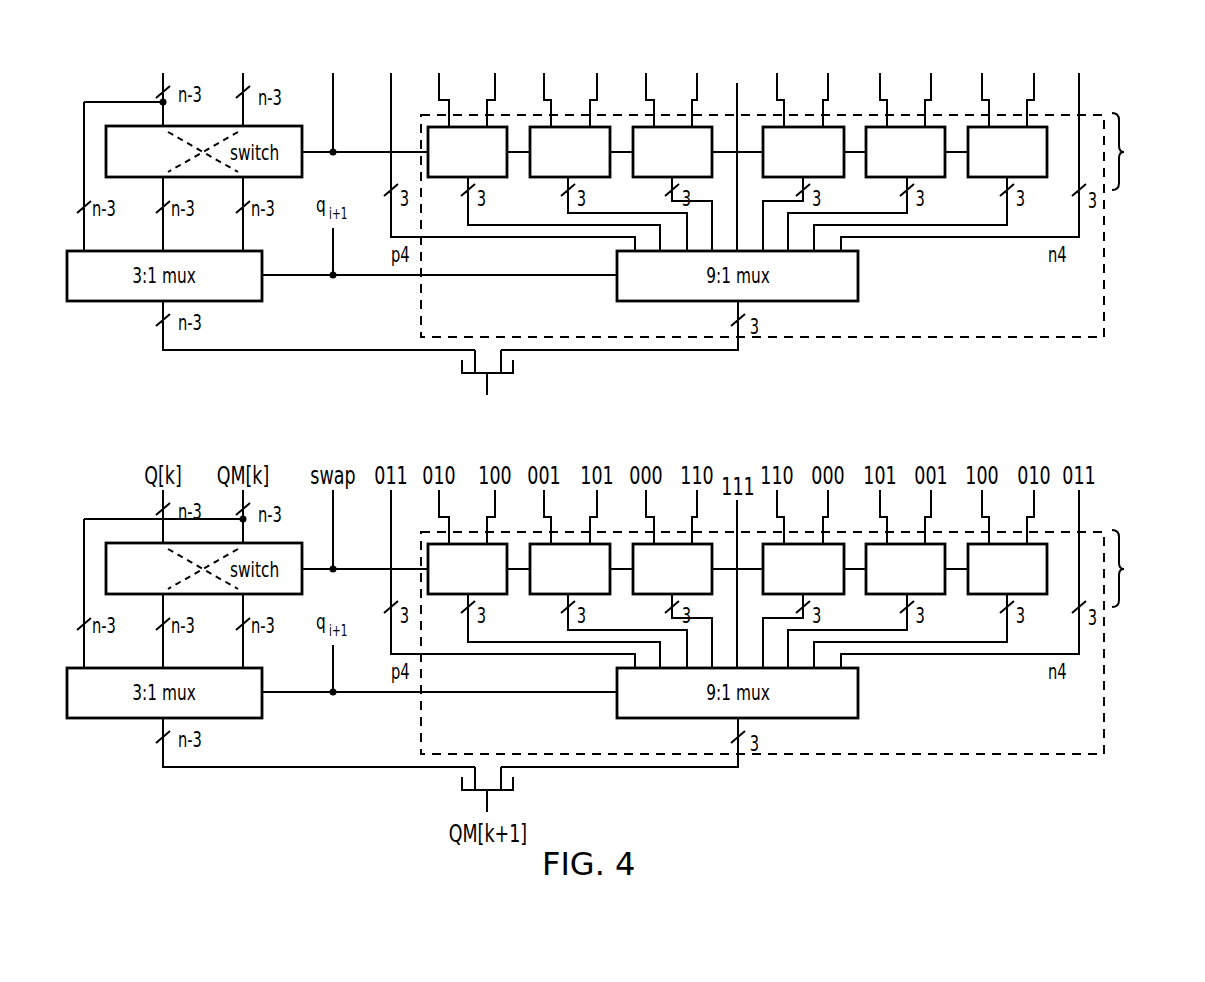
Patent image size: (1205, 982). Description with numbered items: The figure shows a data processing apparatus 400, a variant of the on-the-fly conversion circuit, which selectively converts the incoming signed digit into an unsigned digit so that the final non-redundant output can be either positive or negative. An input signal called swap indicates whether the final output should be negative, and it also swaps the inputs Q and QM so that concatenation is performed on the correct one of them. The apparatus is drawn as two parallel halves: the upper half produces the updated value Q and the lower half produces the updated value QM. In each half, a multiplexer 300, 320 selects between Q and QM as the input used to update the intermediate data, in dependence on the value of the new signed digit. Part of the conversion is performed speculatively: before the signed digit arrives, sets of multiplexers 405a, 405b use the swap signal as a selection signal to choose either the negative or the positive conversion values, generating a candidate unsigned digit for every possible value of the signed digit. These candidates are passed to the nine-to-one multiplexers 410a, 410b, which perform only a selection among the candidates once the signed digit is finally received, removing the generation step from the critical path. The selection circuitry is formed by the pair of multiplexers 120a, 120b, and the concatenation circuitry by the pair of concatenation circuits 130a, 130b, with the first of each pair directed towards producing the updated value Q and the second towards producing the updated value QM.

The data processing apparatus 400 is at (620, 237).
The multiplexer 300 is at (263, 290).
The multiplexer 320 is at (203, 708).
The set of multiplexers 405a is at (814, 151).
The set of multiplexers 405b is at (815, 568).
The 9:1 multiplexer 410a is at (859, 276).
The 9:1 multiplexer 410b is at (785, 696).
The multiplexer 120a is at (883, 338).
The multiplexer 120b is at (762, 670).
The concatenation circuit 130a is at (514, 362).
The concatenation circuit 130b is at (536, 790).